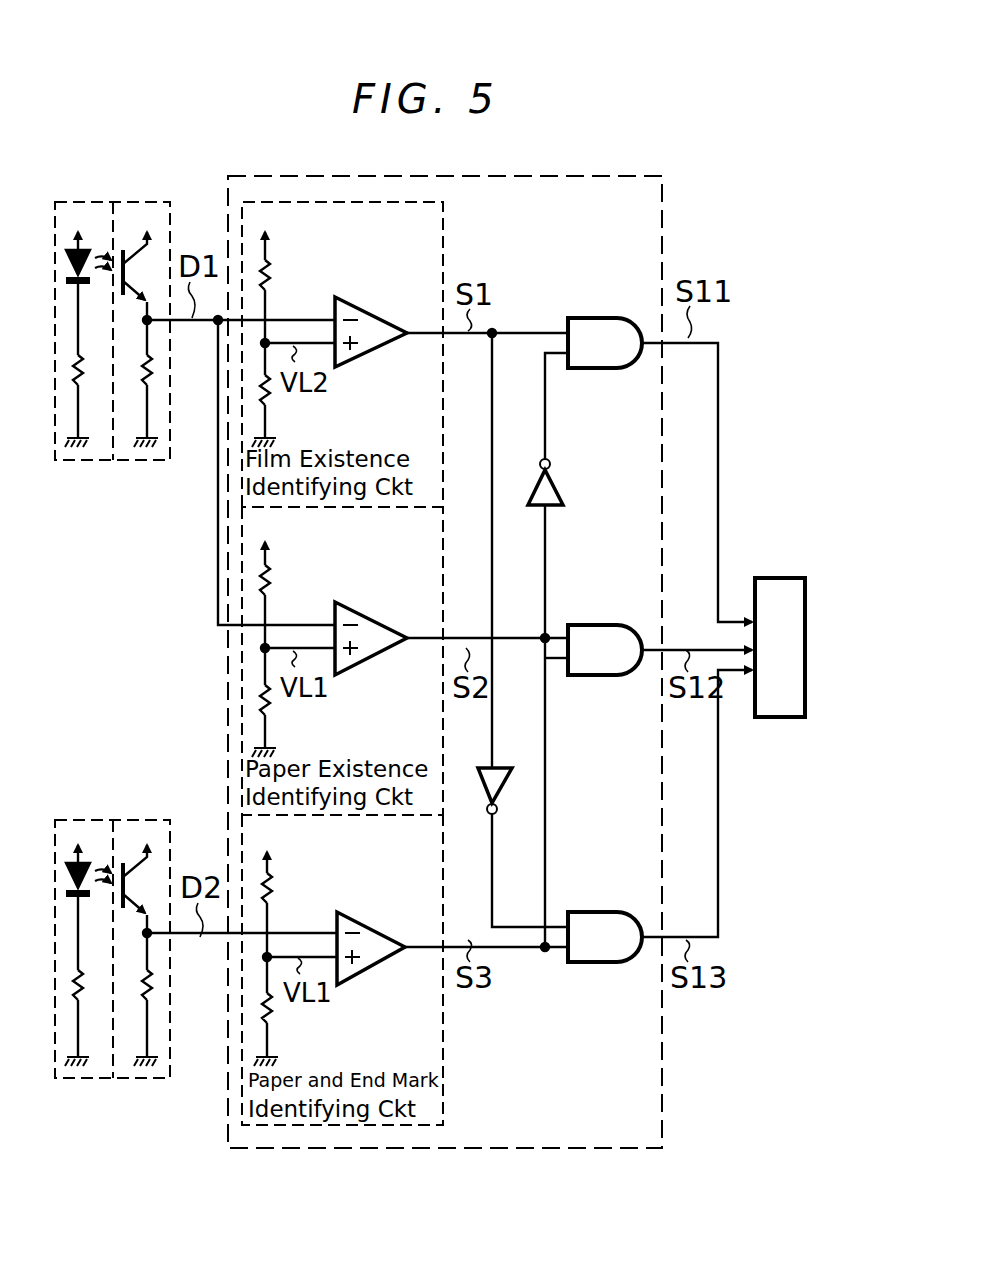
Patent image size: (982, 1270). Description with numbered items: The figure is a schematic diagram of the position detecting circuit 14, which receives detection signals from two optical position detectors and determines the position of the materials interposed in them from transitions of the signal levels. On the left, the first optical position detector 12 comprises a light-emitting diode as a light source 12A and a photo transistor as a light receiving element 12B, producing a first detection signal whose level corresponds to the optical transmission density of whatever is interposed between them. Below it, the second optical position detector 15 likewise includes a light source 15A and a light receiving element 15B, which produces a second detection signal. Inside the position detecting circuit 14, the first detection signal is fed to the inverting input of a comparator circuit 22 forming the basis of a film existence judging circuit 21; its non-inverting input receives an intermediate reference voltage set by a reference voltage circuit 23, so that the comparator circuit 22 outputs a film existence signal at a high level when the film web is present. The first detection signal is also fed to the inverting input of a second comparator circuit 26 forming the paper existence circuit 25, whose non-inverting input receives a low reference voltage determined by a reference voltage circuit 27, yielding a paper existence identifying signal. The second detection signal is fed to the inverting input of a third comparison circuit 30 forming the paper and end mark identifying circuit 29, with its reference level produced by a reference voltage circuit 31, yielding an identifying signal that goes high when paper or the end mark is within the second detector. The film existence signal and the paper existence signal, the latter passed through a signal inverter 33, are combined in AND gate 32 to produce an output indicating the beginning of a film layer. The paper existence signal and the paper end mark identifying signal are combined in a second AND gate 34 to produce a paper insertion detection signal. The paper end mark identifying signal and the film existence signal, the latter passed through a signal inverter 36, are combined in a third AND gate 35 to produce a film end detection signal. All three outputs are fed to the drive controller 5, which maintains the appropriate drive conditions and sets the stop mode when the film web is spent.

The drive controller 5 is at (778, 717).
The optical position detector 12 is at (122, 378).
The light source 12A is at (78, 462).
The light receiving element 12B is at (156, 373).
The position detecting circuit 14 is at (662, 217).
The second optical position detector 15 is at (122, 997).
The light source 15A is at (78, 1080).
The light receiving element 15B is at (156, 988).
The film existence judging circuit 21 is at (442, 246).
The comparator circuit 22 is at (374, 323).
The reference voltage circuit 23 is at (276, 397).
The paper existence circuit 25 is at (442, 585).
The second comparator circuit 26 is at (374, 615).
The reference voltage circuit 27 is at (276, 704).
The paper and end mark identifying circuit 29 is at (440, 905).
The third comparison circuit 30 is at (374, 923).
The reference voltage circuit 31 is at (276, 1014).
The AND gate 32 is at (602, 318).
The signal inverter 33 is at (560, 485).
The second AND gate 34 is at (602, 625).
The third AND gate 35 is at (602, 912).
The signal inverter 36 is at (502, 790).